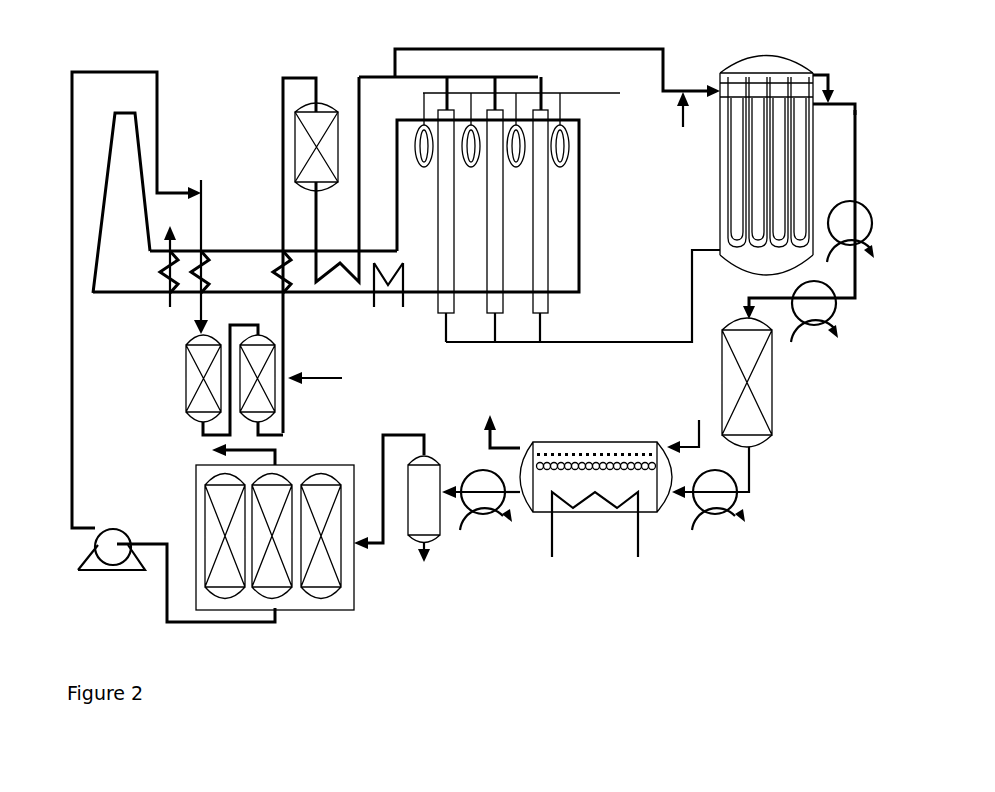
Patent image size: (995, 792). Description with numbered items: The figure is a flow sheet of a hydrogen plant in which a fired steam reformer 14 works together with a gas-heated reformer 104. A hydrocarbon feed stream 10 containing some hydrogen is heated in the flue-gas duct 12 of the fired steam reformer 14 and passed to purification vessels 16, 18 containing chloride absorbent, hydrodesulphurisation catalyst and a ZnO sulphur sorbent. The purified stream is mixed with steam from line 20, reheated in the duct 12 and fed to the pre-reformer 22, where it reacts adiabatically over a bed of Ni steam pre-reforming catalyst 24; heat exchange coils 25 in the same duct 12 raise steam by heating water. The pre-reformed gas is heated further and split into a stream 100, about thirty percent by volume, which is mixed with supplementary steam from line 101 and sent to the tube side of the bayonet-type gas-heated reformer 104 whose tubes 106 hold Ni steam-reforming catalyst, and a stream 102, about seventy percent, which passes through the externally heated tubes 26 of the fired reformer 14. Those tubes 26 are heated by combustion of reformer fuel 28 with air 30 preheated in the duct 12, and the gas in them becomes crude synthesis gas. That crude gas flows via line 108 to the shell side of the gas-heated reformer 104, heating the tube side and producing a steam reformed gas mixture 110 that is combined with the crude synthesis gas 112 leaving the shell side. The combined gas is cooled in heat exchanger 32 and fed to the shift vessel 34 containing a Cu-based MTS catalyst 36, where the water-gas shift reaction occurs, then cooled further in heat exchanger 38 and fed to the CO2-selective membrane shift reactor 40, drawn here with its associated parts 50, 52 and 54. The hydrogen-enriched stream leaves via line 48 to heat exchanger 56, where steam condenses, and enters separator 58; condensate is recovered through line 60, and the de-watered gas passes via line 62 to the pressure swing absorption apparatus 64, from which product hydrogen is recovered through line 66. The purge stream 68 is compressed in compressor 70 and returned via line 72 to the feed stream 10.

The hydrocarbon feed stream 10 is at (201, 210).
The flue-gas duct 12 is at (246, 250).
The fired steam reformer 14 is at (580, 134).
The purification vessel 16 is at (188, 367).
The purification vessel 18 is at (270, 365).
The steam line 20 is at (314, 380).
The pre-reformer 22 is at (326, 103).
The steam pre-reforming catalyst 24 is at (305, 138).
The heat exchange coils 25 is at (393, 300).
The externally heated tubes 26 is at (538, 195).
The reformer fuel 28 is at (603, 93).
The air 30 is at (153, 296).
The heat exchanger 32 is at (872, 222).
The shift vessel 34 is at (758, 440).
The MTS catalyst 36 is at (758, 383).
The heat exchanger 38 is at (733, 496).
The CO2-selective membrane shift reactor 40 is at (672, 512).
The line 48 is at (513, 486).
The cooling coil 50 is at (553, 530).
The inlet line 52 is at (697, 432).
The gas outlet 54 is at (492, 432).
The heat exchanger 56 is at (479, 474).
The separator 58 is at (427, 512).
The condensate line 60 is at (418, 560).
The line 62 is at (395, 432).
The pressure swing absorption apparatus 64 is at (352, 608).
The product hydrogen line 66 is at (208, 449).
The purge stream 68 is at (163, 590).
The compressor 70 is at (93, 548).
The line 72 is at (72, 343).
The stream 100 is at (543, 47).
The supplementary steam line 101 is at (681, 117).
The stream 102 is at (418, 78).
The gas-heated reformer 104 is at (800, 58).
The tubes 106 is at (728, 187).
The line 108 is at (692, 284).
The steam reformed gas mixture 110 is at (830, 83).
The crude synthesis gas 112 is at (820, 105).